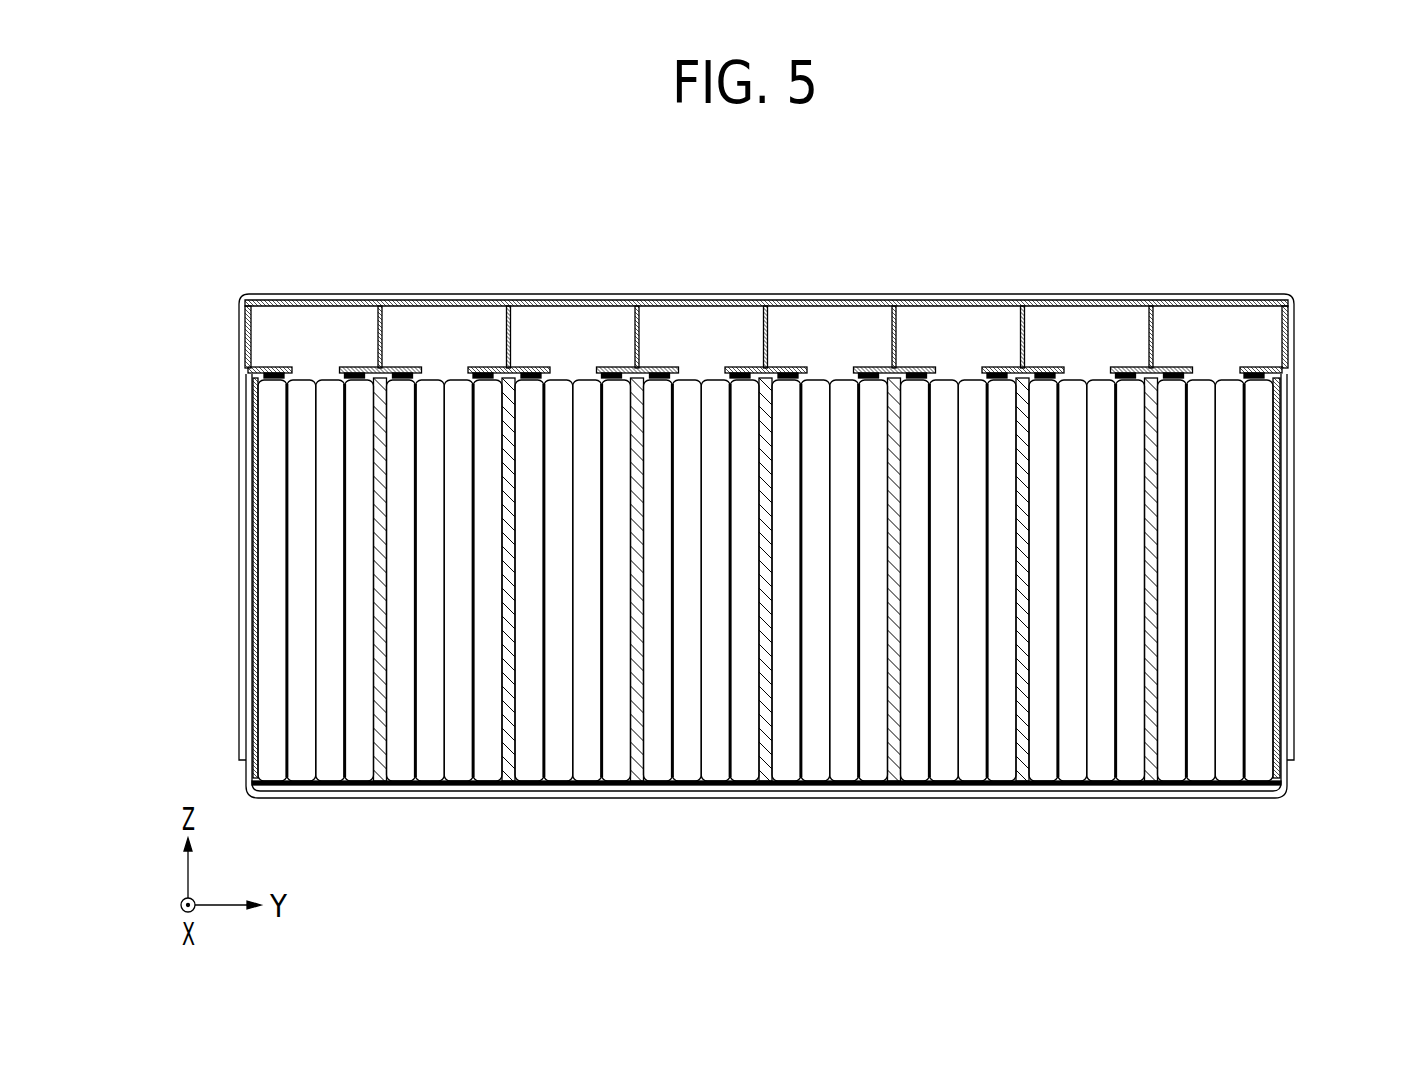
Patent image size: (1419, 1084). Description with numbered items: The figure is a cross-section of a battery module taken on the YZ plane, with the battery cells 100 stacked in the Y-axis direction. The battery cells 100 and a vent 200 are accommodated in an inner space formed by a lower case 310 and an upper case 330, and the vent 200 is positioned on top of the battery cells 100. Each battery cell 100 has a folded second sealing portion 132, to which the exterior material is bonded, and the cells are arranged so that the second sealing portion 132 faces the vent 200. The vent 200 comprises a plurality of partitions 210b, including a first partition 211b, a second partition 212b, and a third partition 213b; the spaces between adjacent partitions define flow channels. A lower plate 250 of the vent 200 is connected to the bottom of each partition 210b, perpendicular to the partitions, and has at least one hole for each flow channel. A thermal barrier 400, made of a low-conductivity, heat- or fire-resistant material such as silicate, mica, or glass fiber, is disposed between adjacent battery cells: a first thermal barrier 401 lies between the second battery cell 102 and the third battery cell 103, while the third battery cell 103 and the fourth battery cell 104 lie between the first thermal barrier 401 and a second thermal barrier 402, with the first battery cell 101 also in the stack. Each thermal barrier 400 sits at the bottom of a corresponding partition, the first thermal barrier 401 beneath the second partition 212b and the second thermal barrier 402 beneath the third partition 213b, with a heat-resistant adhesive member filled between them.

The battery cells 100 is at (689, 580).
The first battery cell 101 is at (275, 632).
The second battery cell 102 is at (333, 663).
The third battery cell 103 is at (397, 698).
The fourth battery cell 104 is at (458, 728).
The second sealing portion 132 is at (268, 377).
The vent 200 is at (712, 281).
The partitions 210b is at (765, 268).
The first partition 211b is at (251, 327).
The second partition 212b is at (383, 327).
The third partition 213b is at (536, 295).
The lower plate 250 is at (262, 365).
The lower case 310 is at (1283, 792).
The upper case 330 is at (1288, 304).
The thermal barrier 400 is at (766, 656).
The first thermal barrier 401 is at (377, 768).
The second thermal barrier 402 is at (514, 630).